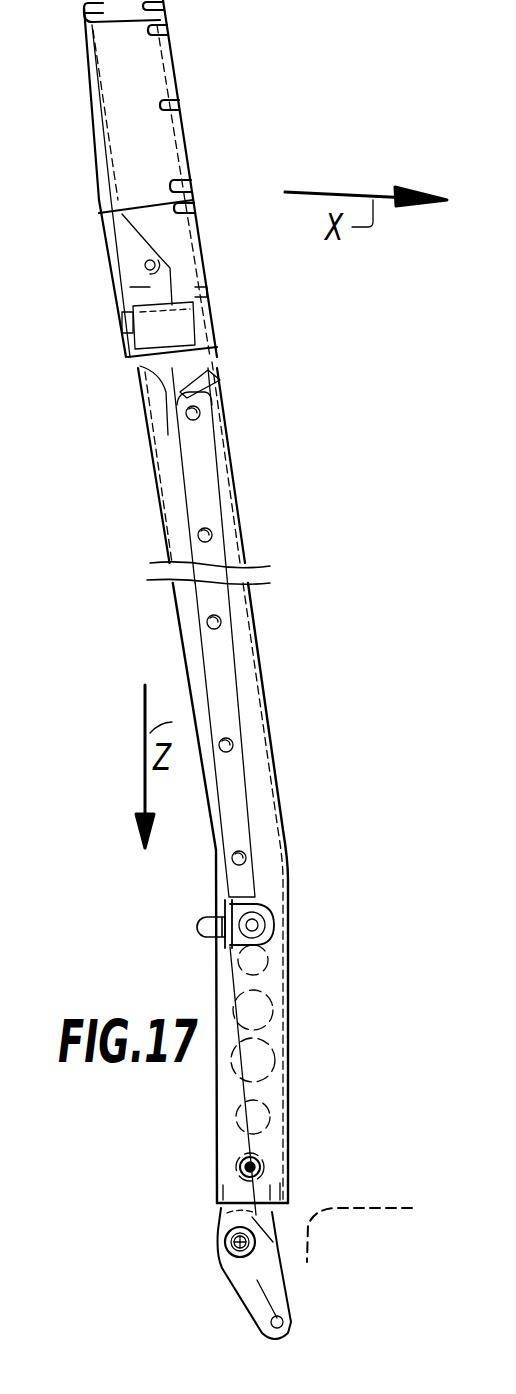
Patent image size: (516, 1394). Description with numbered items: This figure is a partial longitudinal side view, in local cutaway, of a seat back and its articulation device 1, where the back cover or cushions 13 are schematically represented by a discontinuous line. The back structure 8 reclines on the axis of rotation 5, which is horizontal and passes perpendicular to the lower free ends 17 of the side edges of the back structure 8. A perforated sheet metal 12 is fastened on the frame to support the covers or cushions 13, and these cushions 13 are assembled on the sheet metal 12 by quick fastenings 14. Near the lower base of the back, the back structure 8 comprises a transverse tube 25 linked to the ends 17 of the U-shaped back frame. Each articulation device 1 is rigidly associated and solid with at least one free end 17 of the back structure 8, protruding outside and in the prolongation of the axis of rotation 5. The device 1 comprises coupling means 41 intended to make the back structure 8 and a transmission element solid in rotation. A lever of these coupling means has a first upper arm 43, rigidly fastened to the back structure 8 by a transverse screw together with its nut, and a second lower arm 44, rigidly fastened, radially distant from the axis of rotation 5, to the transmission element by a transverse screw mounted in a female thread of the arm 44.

The articulation device 1 is at (158, 1200).
The axis of rotation 5 is at (215, 1254).
The back structure 8 is at (208, 470).
The perforated sheet metal 12 is at (210, 723).
The covers or cushions 13 is at (102, 370).
The quick fastenings 14 is at (198, 933).
The lower free ends 17 is at (283, 1193).
The transverse tube 25 is at (280, 1281).
The coupling means 41 is at (212, 1286).
The first upper arm 43 is at (230, 1192).
The second lower arm 44 is at (270, 1290).